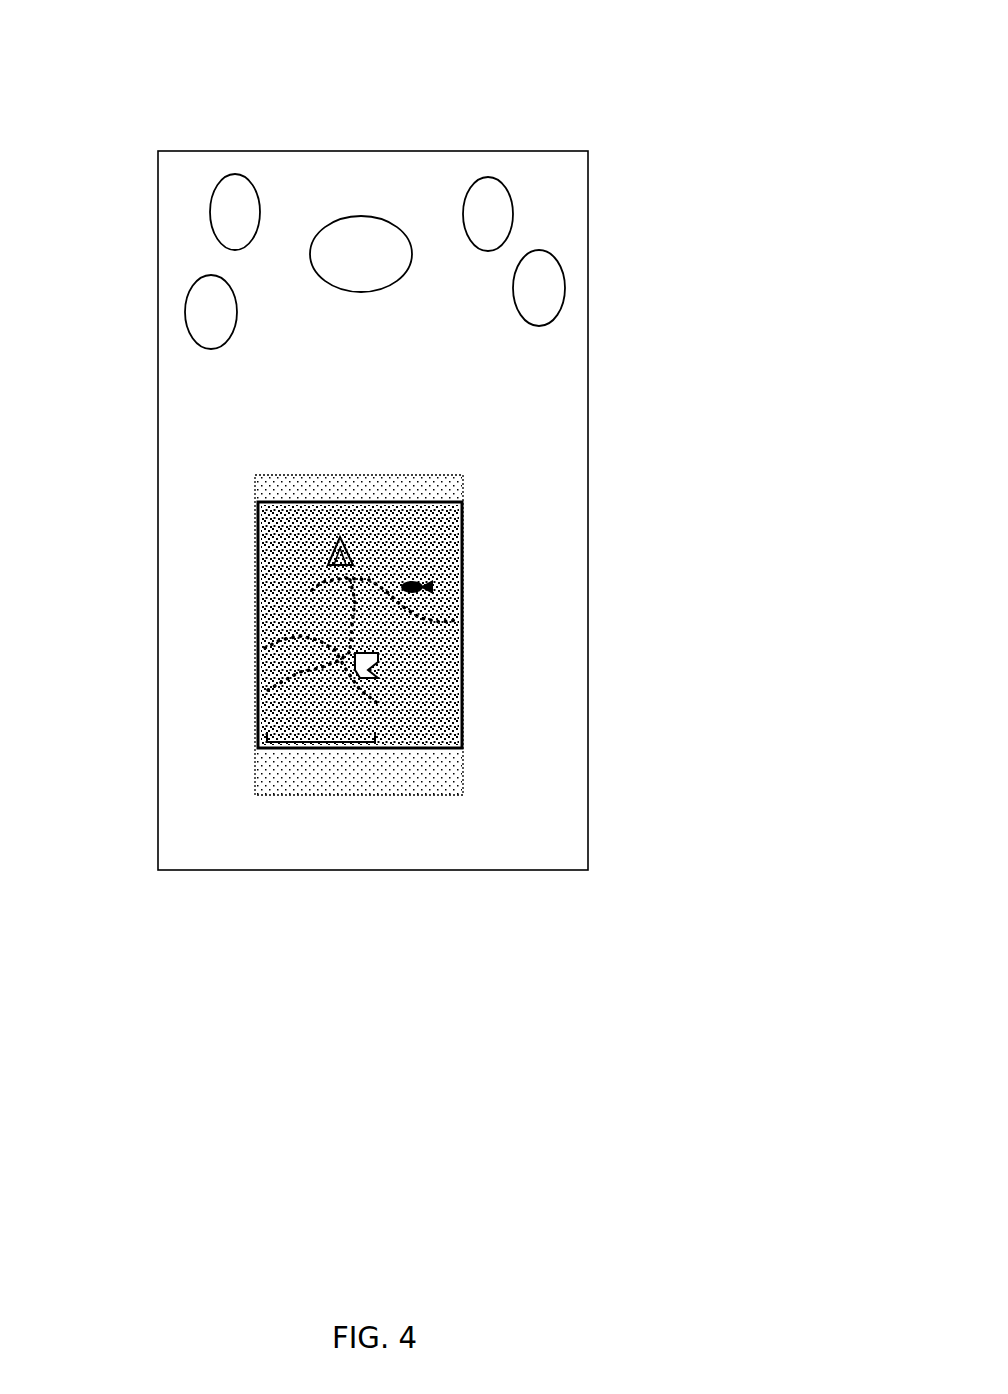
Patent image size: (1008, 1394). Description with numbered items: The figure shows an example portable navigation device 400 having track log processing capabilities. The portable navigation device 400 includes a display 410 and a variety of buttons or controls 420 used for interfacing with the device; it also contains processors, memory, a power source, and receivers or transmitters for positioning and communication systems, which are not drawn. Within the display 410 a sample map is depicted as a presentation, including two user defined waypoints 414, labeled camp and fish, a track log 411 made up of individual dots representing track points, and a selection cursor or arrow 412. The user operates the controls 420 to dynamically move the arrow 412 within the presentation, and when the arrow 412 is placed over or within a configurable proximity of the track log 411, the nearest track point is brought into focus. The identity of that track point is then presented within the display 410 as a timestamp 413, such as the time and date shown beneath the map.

The portable navigation device 400 is at (600, 137).
The display 410 is at (463, 543).
The track log 411 is at (312, 592).
The selection cursor or arrow 412 is at (373, 668).
The timestamp 413 is at (283, 763).
The user defined waypoints 414 is at (410, 560).
The buttons or controls 420 is at (238, 298).